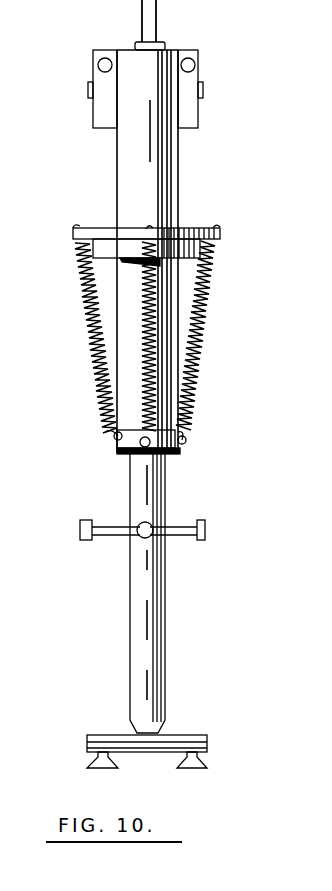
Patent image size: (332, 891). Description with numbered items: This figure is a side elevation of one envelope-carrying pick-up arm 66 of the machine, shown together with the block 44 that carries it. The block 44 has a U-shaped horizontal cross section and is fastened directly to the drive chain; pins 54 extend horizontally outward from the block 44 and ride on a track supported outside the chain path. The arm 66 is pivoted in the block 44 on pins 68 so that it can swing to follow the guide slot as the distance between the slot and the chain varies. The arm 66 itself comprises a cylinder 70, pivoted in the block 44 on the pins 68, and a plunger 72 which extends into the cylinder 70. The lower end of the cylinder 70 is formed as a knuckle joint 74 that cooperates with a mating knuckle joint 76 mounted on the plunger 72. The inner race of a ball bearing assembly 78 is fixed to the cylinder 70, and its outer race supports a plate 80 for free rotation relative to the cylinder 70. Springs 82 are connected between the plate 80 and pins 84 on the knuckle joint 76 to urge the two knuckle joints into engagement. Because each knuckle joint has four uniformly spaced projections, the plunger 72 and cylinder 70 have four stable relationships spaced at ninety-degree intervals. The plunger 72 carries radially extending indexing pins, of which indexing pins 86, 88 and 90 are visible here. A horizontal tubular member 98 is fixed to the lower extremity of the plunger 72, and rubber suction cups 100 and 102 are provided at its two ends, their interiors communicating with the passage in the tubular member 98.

The block 44 is at (197, 118).
The pins 54 is at (105, 58).
The arm 66 is at (208, 195).
The pins 68 is at (88, 91).
The cylinder 70 is at (125, 181).
The plunger 72 is at (157, 492).
The knuckle joint 74 is at (181, 452).
The mating knuckle joint 76 is at (124, 455).
The ball bearing assembly 78 is at (205, 259).
The plate 80 is at (207, 229).
The springs 82 is at (88, 326).
The pins 84 is at (108, 445).
The indexing pin 86 is at (208, 529).
The indexing pin 88 is at (152, 536).
The indexing pin 90 is at (81, 529).
The horizontal tubular member 98 is at (103, 735).
The suction cup 100 is at (183, 770).
The suction cup 102 is at (109, 770).